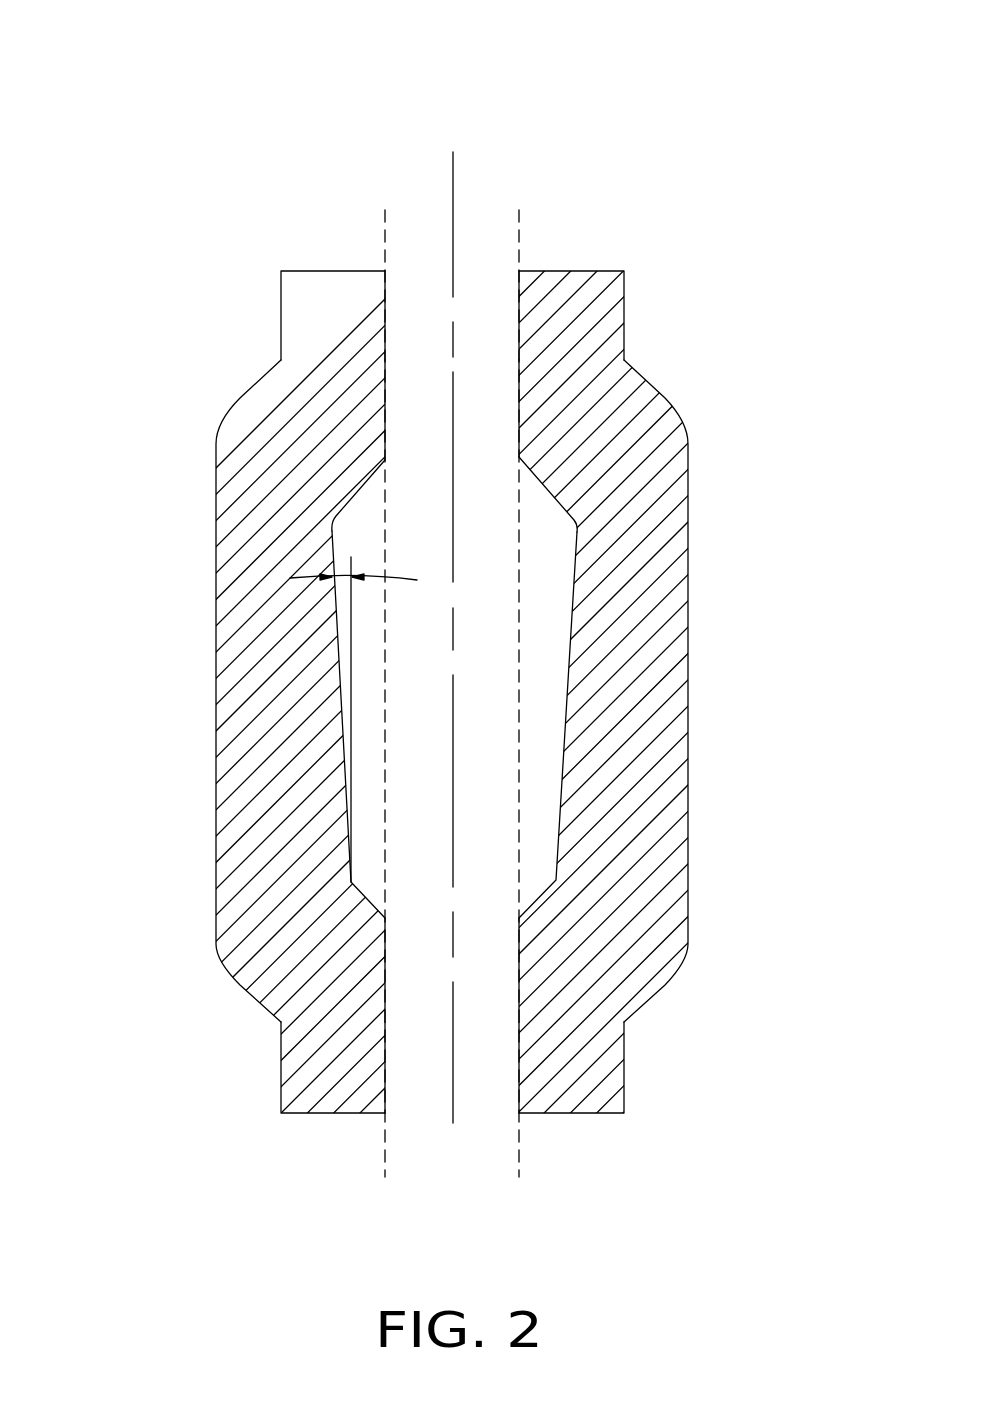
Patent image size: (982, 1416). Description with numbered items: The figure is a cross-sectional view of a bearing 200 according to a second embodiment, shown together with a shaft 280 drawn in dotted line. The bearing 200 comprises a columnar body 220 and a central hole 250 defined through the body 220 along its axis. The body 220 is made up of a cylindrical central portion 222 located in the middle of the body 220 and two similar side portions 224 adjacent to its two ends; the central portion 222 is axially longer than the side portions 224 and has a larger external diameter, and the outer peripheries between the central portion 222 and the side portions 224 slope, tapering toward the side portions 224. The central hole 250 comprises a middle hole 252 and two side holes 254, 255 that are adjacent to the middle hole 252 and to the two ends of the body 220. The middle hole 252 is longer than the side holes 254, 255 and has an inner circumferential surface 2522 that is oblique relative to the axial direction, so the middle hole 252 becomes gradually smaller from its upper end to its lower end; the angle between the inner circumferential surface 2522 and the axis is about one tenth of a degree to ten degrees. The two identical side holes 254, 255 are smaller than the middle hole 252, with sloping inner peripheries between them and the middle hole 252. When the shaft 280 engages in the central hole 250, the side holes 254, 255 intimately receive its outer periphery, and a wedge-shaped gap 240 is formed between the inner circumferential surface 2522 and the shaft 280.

The bearing 200 is at (491, 616).
The columnar body 220 is at (643, 757).
The cylindrical central portion 222 is at (647, 550).
The side portions 224 is at (595, 310).
The wedge-shaped gap 240 is at (542, 622).
The central hole 250 is at (485, 738).
The middle hole 252 is at (368, 510).
The inner circumferential surface 2522 is at (335, 652).
The side hole 254 is at (421, 293).
The side hole 255 is at (422, 1088).
The shaft 280 is at (520, 232).